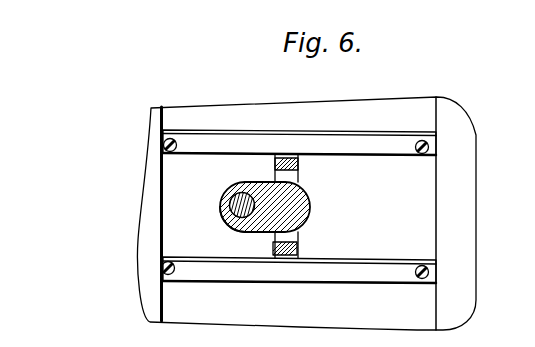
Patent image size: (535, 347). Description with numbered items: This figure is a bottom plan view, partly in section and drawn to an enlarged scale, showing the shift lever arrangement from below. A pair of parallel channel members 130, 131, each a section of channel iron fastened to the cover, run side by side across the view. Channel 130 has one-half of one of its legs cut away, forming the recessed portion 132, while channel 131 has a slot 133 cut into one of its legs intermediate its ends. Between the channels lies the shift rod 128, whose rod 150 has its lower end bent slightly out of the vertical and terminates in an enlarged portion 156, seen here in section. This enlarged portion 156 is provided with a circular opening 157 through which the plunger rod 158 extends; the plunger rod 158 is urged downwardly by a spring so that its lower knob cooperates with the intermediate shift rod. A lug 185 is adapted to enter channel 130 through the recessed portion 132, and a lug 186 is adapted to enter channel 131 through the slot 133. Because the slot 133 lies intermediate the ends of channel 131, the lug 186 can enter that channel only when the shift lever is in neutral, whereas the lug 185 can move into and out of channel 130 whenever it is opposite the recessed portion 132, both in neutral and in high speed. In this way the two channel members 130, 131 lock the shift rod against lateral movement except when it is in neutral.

The shift rod 128 is at (311, 204).
The channel member 130 is at (273, 132).
The channel member 131 is at (385, 273).
The cut away portion 132 is at (237, 156).
The slot 133 is at (297, 255).
The rod 150 is at (299, 186).
The enlarged portion 156 is at (253, 182).
The circular opening 157 is at (228, 226).
The plunger rod 158 is at (231, 214).
The lug 185 is at (299, 156).
The lug 186 is at (281, 245).